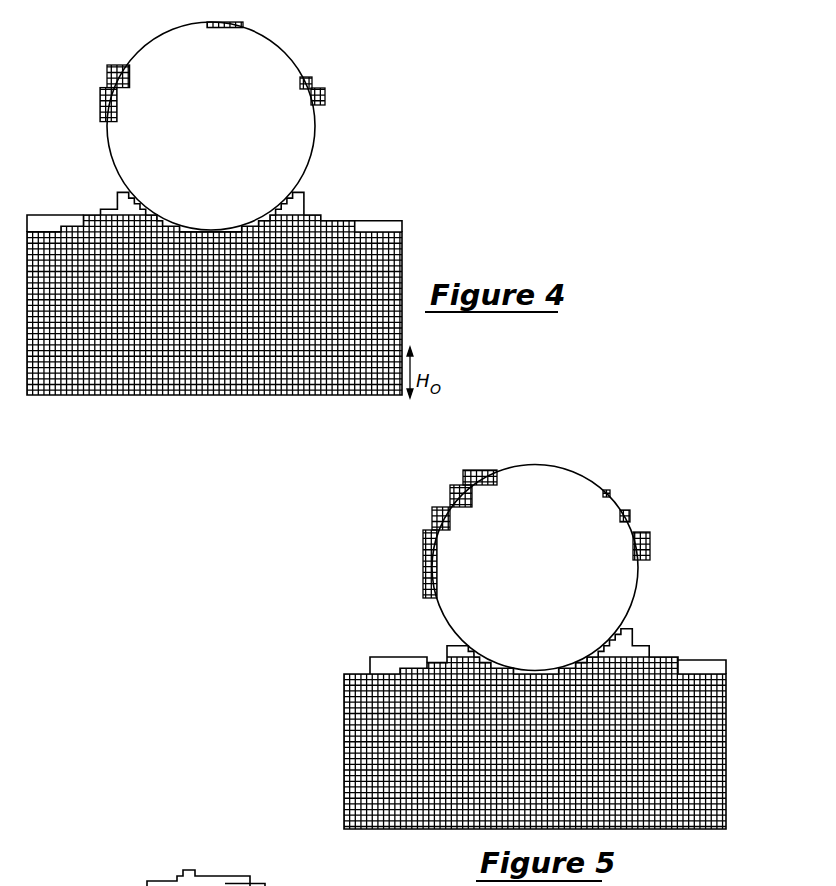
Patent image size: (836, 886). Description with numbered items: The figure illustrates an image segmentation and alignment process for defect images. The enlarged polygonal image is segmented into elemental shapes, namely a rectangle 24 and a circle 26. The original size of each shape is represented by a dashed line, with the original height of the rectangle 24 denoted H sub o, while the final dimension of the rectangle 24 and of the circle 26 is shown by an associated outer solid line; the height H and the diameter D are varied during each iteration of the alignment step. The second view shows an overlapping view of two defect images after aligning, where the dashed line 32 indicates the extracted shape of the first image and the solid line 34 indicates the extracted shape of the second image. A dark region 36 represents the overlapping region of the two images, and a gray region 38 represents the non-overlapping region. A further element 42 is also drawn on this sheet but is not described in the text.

In FIG. 4, the rectangle 24 is at (402, 229).
In FIG. 4, the circle 26 is at (297, 70).
In FIG. 5, the dashed line 32 is at (470, 470).
In FIG. 5, the solid line 34 is at (390, 657).
In FIG. 5, the dark region 36 is at (602, 490).
In FIG. 5, the gray region 38 is at (712, 753).
In FIG. 5, the outline segment 42 is at (268, 885).